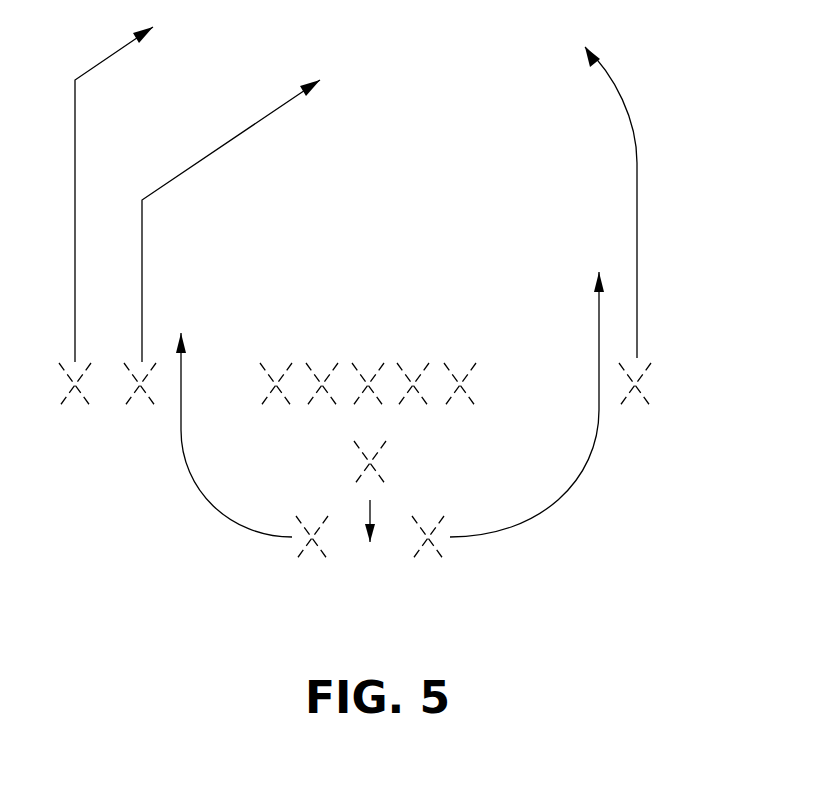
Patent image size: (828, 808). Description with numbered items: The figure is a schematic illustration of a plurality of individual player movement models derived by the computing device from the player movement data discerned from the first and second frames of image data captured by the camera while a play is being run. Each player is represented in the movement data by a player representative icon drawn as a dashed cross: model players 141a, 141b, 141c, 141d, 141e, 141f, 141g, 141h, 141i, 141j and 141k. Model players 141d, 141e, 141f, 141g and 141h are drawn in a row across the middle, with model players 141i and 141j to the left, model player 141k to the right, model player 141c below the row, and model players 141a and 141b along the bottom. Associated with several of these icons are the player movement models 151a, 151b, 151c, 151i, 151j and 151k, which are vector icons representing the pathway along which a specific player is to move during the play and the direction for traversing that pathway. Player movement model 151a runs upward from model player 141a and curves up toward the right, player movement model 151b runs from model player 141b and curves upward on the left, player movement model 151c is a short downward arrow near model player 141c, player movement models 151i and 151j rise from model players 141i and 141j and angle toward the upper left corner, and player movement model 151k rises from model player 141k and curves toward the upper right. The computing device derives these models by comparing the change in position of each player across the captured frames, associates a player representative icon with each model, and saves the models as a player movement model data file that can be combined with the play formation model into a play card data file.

The model player 141a is at (443, 560).
The model player 141b is at (297, 560).
The model player 141c is at (380, 477).
The player representative icon 141d is at (475, 402).
The player representative icon 141e is at (425, 402).
The player representative icon 141f is at (357, 407).
The player representative icon 141g is at (305, 407).
The player representative icon 141h is at (263, 402).
The model player 141i is at (157, 405).
The model player 141j is at (92, 405).
The model player 141k is at (647, 403).
The player movement model 151a is at (548, 507).
The player movement model 151b is at (195, 493).
The player movement model 151c is at (363, 518).
The player movement model 151i is at (230, 140).
The player movement model 151j is at (77, 178).
The player movement model 151k is at (637, 207).